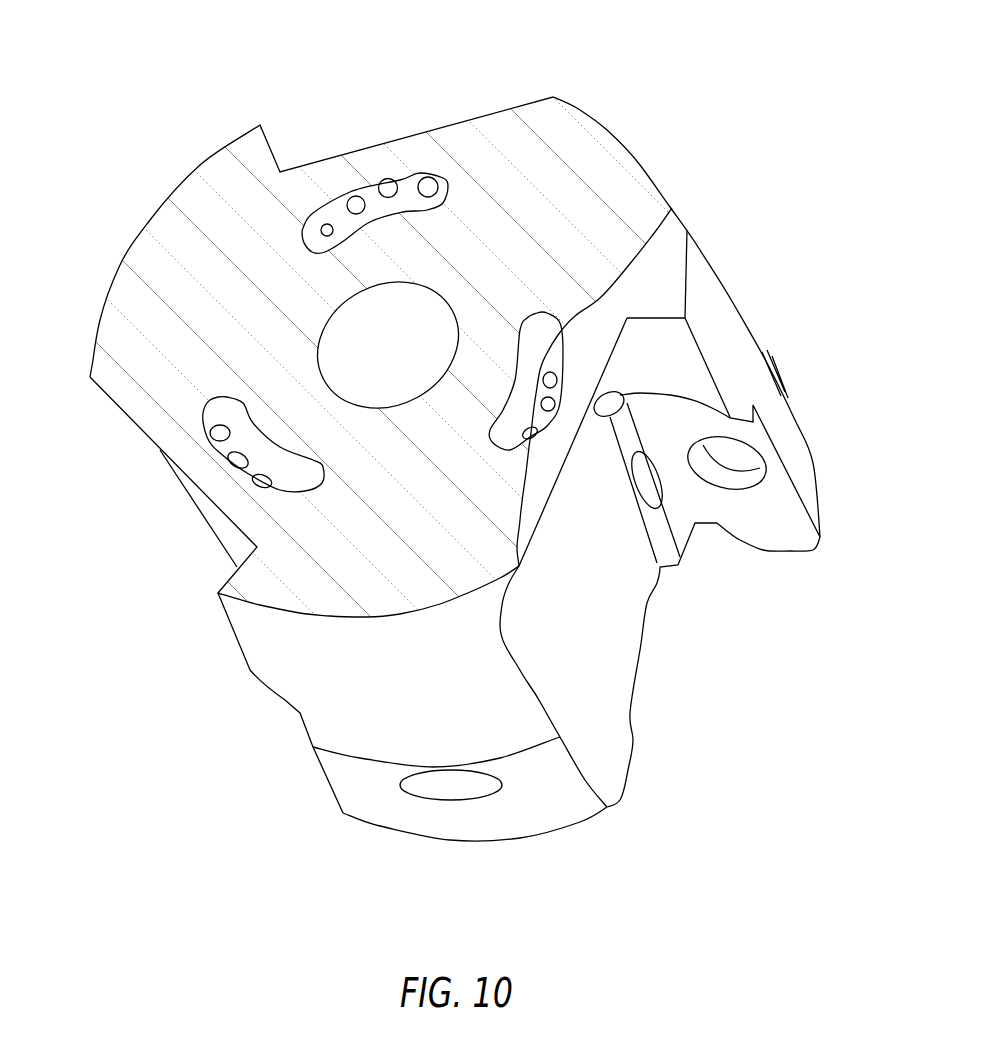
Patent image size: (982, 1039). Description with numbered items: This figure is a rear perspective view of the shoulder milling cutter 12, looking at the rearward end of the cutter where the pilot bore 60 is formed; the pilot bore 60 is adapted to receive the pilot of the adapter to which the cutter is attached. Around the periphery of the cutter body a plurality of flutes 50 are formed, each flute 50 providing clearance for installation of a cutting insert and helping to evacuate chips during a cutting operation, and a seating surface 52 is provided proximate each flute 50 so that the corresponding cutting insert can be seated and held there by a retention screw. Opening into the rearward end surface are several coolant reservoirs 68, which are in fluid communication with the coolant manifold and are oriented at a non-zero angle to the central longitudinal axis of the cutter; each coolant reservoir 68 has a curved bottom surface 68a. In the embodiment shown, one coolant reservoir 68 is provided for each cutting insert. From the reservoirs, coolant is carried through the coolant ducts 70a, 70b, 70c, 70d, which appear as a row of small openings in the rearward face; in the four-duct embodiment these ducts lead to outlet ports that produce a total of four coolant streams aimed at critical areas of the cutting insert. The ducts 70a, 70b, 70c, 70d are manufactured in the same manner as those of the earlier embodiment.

The milling cutter 12 is at (559, 44).
The flute 50 is at (617, 527).
The seating surface 52 is at (767, 523).
The pilot bore 60 is at (353, 347).
The coolant reservoir 68 is at (337, 208).
The curved bottom surface 68a is at (247, 450).
The coolant duct 70a is at (322, 229).
The coolant duct 70b is at (355, 203).
The coolant duct 70c is at (390, 178).
The coolant duct 70d is at (428, 177).